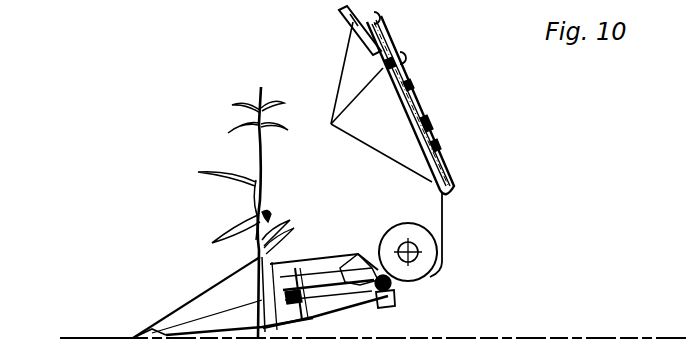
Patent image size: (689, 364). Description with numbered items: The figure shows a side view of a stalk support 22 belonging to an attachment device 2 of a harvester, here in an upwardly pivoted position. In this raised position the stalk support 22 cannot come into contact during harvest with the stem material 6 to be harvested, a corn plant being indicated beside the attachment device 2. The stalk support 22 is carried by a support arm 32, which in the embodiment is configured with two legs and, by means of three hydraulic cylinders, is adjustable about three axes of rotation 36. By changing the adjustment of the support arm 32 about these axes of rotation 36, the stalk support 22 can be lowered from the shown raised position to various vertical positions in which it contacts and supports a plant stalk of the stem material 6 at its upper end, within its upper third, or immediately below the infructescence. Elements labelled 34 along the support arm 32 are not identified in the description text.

The attachment device 2 is at (160, 268).
The stem material 6 is at (248, 181).
The stalk support 22 is at (356, 32).
The support arm 32 is at (446, 161).
The guide elements 34 is at (393, 40).
The axes of rotation 36 is at (370, 102).